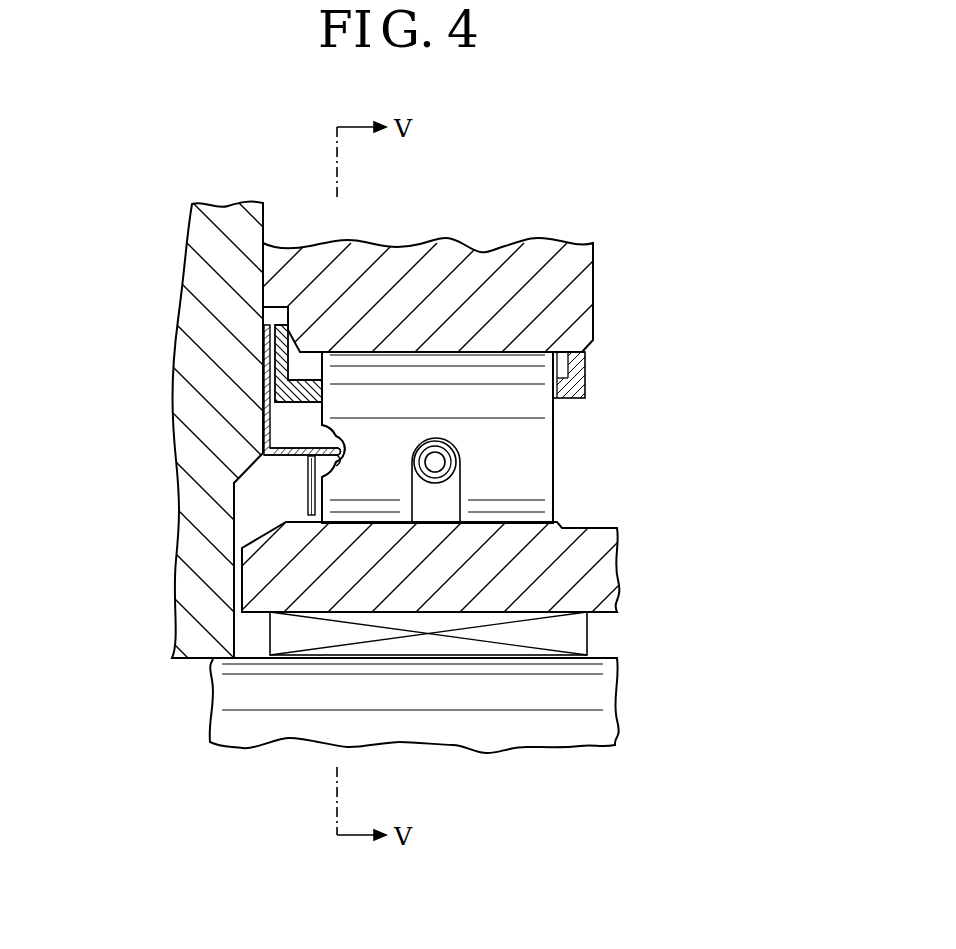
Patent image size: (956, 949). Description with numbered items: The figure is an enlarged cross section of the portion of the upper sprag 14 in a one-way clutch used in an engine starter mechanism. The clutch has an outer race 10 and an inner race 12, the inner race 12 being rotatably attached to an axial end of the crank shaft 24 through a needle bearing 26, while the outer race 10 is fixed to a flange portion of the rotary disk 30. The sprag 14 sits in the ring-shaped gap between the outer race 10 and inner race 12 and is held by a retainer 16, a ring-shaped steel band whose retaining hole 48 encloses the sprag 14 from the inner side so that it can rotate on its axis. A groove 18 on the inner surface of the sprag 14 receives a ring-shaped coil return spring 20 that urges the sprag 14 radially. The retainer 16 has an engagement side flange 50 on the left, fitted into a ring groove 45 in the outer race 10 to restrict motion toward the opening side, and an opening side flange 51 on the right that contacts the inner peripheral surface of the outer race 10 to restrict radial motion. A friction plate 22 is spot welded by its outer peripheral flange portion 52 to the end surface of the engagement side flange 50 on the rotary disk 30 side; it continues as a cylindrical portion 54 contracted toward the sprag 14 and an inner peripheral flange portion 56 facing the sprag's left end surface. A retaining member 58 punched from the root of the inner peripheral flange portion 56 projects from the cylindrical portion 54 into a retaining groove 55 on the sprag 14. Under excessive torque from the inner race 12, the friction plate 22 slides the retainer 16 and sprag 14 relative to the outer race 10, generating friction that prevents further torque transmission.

The outer race 10 is at (575, 260).
The inner race 12 is at (592, 551).
The sprag 14 is at (540, 442).
The retainer 16 is at (596, 392).
The groove 18 is at (456, 500).
The return spring 20 is at (457, 458).
The friction plate 22 is at (252, 410).
The crank shaft 24 is at (597, 722).
The needle bearing 26 is at (572, 637).
The rotary disk 30 is at (223, 214).
The ring groove 45 is at (265, 318).
The retaining hole 48 is at (352, 353).
The engagement side flange 50 is at (288, 307).
The opening side flange 51 is at (582, 355).
The outer peripheral flange portion 52 is at (278, 336).
The cylindrical portion 54 is at (305, 457).
The retaining groove 55 is at (336, 466).
The inner peripheral flange portion 56 is at (308, 503).
The retaining member 58 is at (343, 434).